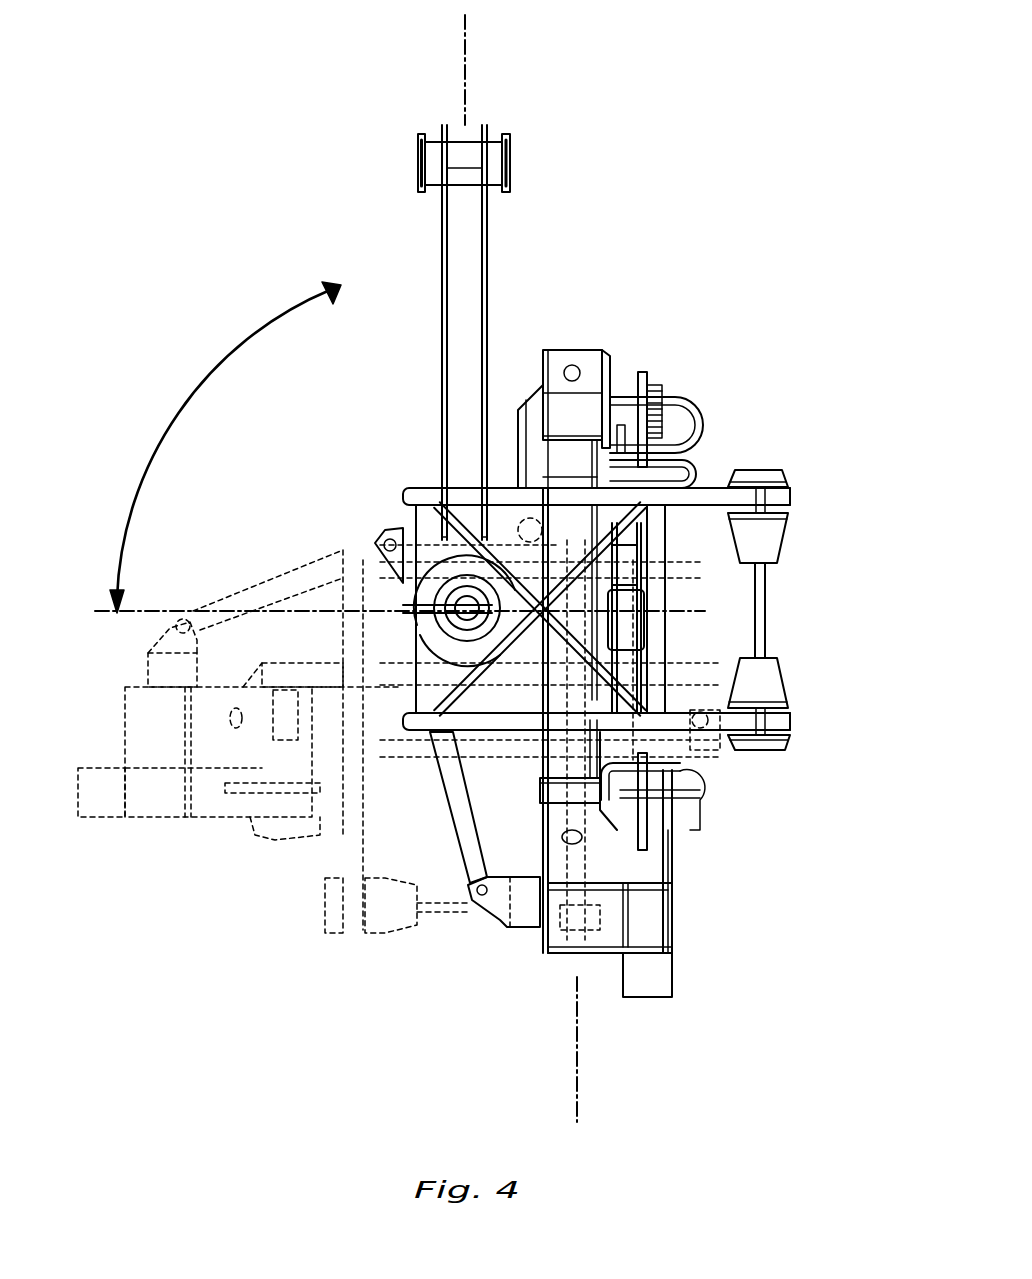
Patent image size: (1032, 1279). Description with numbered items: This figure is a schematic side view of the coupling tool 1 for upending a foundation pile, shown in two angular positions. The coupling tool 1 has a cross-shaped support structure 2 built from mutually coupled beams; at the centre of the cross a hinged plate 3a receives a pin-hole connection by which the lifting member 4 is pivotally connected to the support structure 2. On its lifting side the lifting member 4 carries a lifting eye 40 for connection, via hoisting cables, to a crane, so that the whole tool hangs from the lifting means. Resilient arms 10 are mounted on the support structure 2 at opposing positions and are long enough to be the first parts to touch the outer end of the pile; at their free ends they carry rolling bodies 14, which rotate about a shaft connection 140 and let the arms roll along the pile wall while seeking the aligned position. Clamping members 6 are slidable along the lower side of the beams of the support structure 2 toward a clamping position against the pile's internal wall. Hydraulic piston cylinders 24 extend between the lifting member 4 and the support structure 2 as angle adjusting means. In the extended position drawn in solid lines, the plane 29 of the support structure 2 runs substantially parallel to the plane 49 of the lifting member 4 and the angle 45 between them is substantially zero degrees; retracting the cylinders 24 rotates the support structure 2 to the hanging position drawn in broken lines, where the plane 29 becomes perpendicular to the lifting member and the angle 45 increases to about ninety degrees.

The coupling tool 1 is at (808, 428).
The support structure 2 is at (618, 353).
The hinged plate 3a is at (420, 670).
The lifting member 4 is at (476, 264).
The clamping member 6 is at (690, 812).
The resilient arm 10 is at (393, 481).
The rolling body 14 is at (775, 538).
The shaft connection 140 is at (778, 496).
The hydraulic piston cylinder 24 is at (468, 837).
The plane of support structure 29 is at (580, 1097).
The lifting eye 40 is at (430, 160).
The angle 45 is at (180, 408).
The plane of lifting member 49 is at (468, 28).